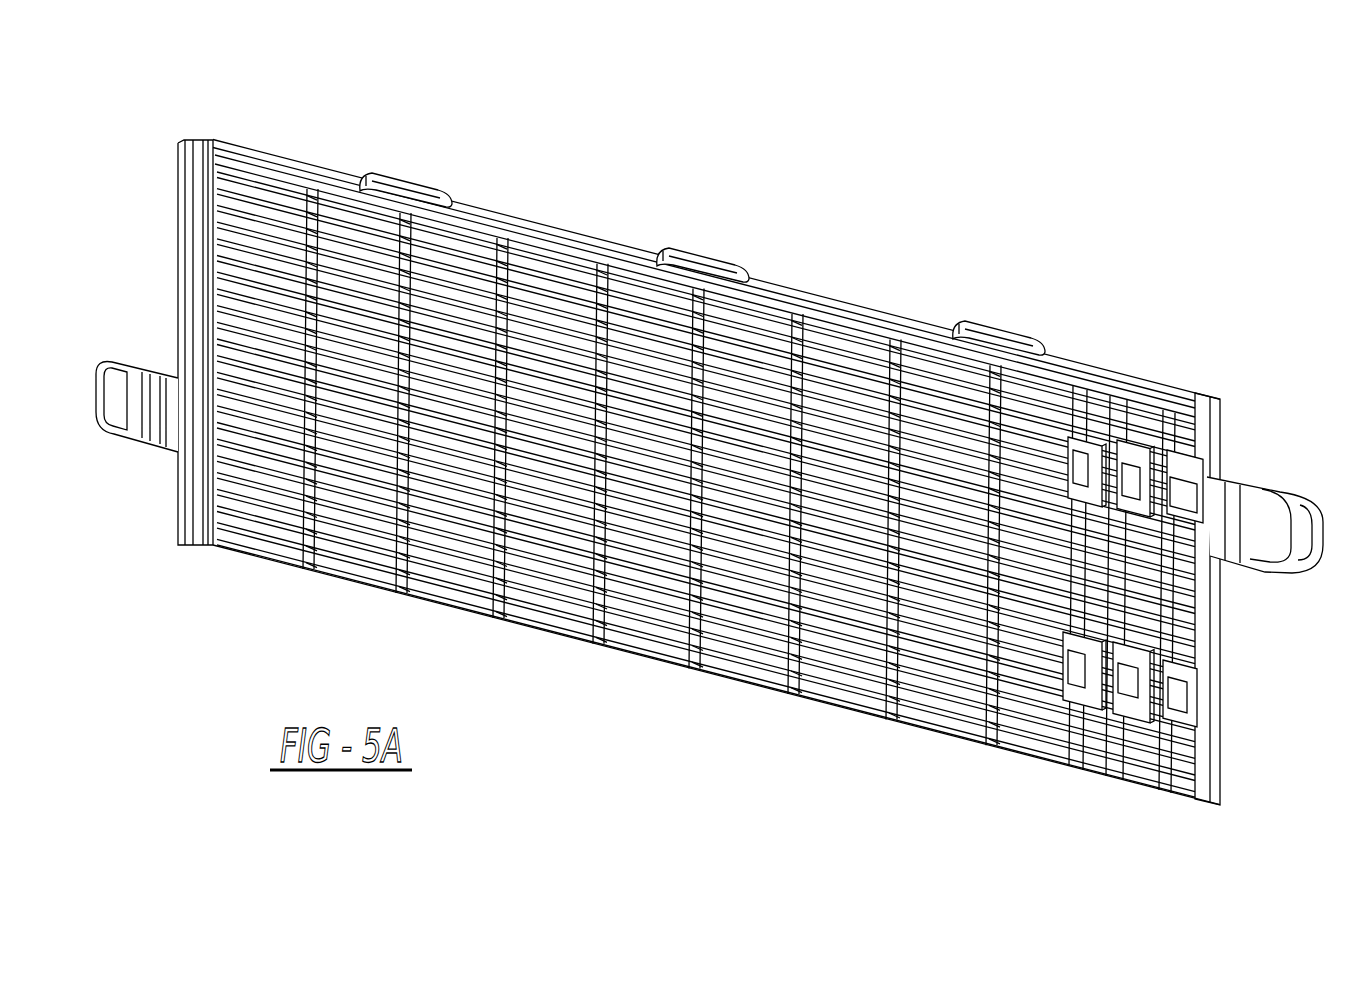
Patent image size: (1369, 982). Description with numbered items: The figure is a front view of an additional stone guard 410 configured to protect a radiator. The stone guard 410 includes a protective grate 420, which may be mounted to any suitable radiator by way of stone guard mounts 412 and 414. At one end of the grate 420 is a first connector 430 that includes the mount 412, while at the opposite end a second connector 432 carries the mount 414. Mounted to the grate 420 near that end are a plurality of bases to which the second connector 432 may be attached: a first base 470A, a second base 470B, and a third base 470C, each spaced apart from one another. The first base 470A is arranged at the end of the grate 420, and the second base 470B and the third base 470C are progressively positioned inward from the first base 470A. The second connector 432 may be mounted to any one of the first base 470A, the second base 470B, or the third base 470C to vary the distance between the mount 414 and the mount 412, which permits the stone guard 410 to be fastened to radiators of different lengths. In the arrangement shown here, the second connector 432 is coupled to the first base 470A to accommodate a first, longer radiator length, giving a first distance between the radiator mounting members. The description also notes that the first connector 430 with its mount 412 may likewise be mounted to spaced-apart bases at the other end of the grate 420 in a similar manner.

The stone guard 410 is at (771, 187).
The stone guard mount 412 is at (124, 352).
The stone guard mount 414 is at (1297, 540).
The protective grate 420 is at (842, 337).
The first connector 430 is at (199, 153).
The second connector 432 is at (1192, 627).
The first base 470A is at (1190, 467).
The second base 470B is at (1140, 462).
The third base 470C is at (1090, 447).